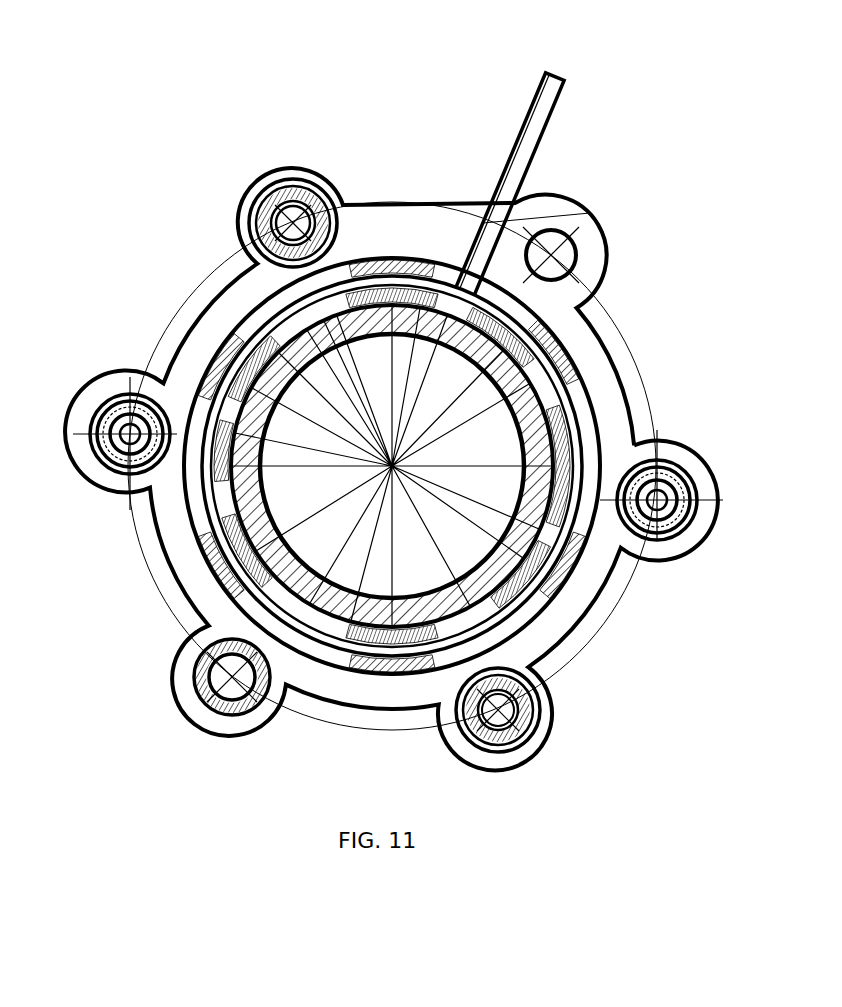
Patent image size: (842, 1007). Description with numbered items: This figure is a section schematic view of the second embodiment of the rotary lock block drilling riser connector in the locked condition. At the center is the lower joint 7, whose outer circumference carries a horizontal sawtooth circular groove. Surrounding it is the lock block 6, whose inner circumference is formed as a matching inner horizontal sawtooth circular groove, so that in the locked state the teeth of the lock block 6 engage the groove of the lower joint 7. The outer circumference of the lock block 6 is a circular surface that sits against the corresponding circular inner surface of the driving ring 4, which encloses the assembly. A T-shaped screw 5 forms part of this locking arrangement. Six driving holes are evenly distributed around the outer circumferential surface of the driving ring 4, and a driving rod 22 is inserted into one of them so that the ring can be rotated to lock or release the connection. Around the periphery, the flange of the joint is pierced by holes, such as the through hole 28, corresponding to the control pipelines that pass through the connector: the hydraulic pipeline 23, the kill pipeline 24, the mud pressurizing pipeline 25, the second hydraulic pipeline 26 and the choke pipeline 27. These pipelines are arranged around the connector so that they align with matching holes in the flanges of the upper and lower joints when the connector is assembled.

The driving ring 4 is at (248, 335).
The T-shaped screw 5 is at (402, 262).
The lock block 6 is at (512, 290).
The lower joint 7 is at (585, 400).
The driving rod 22 is at (502, 170).
The hydraulic pipeline 23 is at (680, 547).
The kill pipeline 24 is at (497, 768).
The mud pressurizing pipeline 25 is at (190, 708).
The hydraulic pipeline 26 is at (118, 390).
The choke pipeline 27 is at (265, 170).
The through hole 28 is at (603, 290).